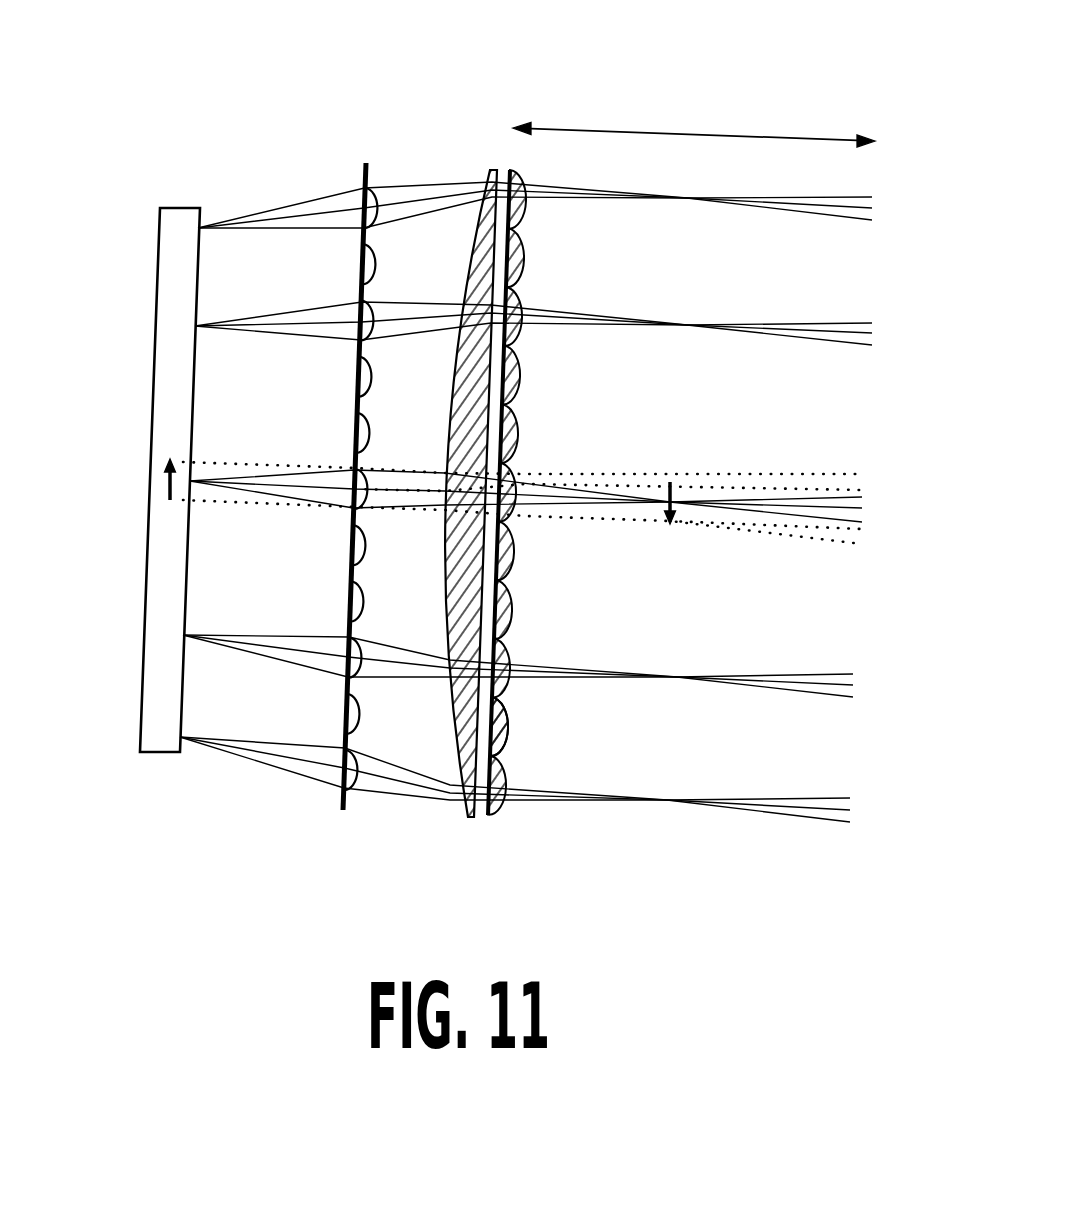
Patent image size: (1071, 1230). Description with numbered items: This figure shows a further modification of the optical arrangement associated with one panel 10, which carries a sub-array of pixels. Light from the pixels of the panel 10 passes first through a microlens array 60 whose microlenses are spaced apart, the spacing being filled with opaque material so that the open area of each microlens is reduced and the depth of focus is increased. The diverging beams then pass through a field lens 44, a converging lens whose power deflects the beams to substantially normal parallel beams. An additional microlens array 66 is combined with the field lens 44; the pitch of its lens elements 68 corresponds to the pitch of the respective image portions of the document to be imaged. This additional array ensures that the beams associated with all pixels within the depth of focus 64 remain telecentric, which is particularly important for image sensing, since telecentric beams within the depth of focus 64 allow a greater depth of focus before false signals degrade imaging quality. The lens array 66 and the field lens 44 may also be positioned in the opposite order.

The panel 10 is at (157, 283).
The microlens array 60 is at (361, 134).
The field lens 44 is at (490, 177).
The additional microlens array 66 is at (500, 139).
The lens elements 68 is at (503, 737).
The depth of focus 64 is at (684, 131).